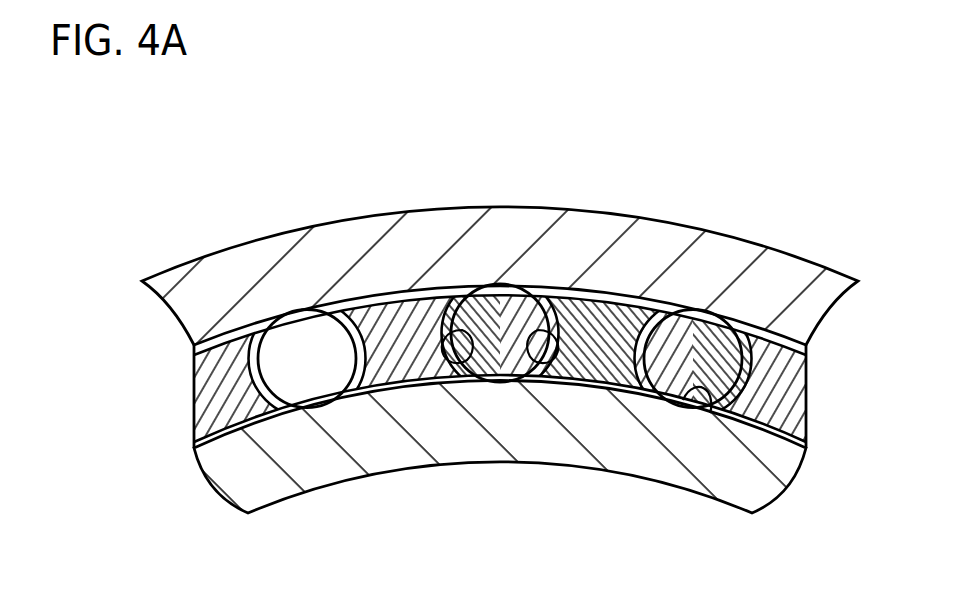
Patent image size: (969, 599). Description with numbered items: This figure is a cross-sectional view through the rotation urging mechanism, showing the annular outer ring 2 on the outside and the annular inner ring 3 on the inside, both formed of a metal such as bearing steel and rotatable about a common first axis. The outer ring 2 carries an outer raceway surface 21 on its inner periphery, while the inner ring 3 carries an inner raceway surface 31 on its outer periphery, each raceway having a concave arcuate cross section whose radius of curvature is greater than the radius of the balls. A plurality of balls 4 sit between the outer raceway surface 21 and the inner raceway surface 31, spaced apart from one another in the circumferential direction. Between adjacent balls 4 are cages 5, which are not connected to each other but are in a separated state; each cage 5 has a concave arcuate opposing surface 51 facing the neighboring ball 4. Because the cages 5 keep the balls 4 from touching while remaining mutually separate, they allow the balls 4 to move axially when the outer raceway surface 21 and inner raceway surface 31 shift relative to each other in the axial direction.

The outer ring 2 is at (664, 232).
The outer raceway surface 21 is at (553, 290).
The inner ring 3 is at (320, 467).
The inner raceway surface 31 is at (710, 413).
The ball 4 is at (303, 343).
The cage 5 is at (201, 356).
The opposing surface 51 is at (460, 365).